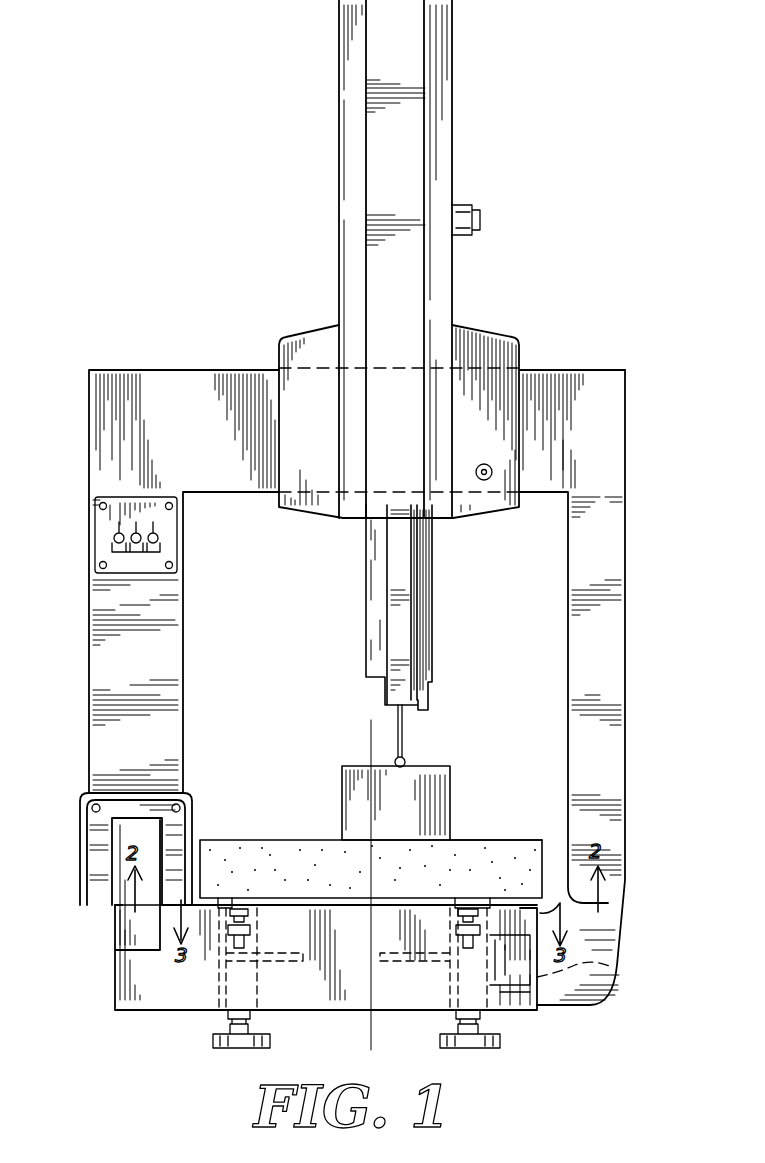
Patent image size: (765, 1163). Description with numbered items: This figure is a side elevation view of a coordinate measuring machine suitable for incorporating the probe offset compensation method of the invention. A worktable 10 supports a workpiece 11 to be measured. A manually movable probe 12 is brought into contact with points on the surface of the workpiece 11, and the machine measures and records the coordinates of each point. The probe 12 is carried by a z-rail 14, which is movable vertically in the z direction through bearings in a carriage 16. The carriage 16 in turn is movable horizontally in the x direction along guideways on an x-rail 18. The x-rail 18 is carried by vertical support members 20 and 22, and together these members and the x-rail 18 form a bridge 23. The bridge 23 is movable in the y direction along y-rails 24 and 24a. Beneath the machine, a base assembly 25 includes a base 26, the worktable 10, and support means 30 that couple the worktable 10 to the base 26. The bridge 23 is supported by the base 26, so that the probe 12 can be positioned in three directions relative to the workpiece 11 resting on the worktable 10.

The worktable 10 is at (293, 840).
The workpiece 11 is at (406, 810).
The manually movable probe 12 is at (405, 760).
The z-rail 14 is at (432, 625).
The carriage 16 is at (306, 338).
The x-rail 18 is at (195, 370).
The vertical support member 20 is at (88, 601).
The vertical support member 22 is at (628, 617).
The bridge 23 is at (563, 371).
The y-rail 24 is at (114, 922).
The y-rail 24a is at (616, 975).
The base assembly 25 is at (481, 838).
The base 26 is at (348, 1012).
The support means 30 is at (242, 892).